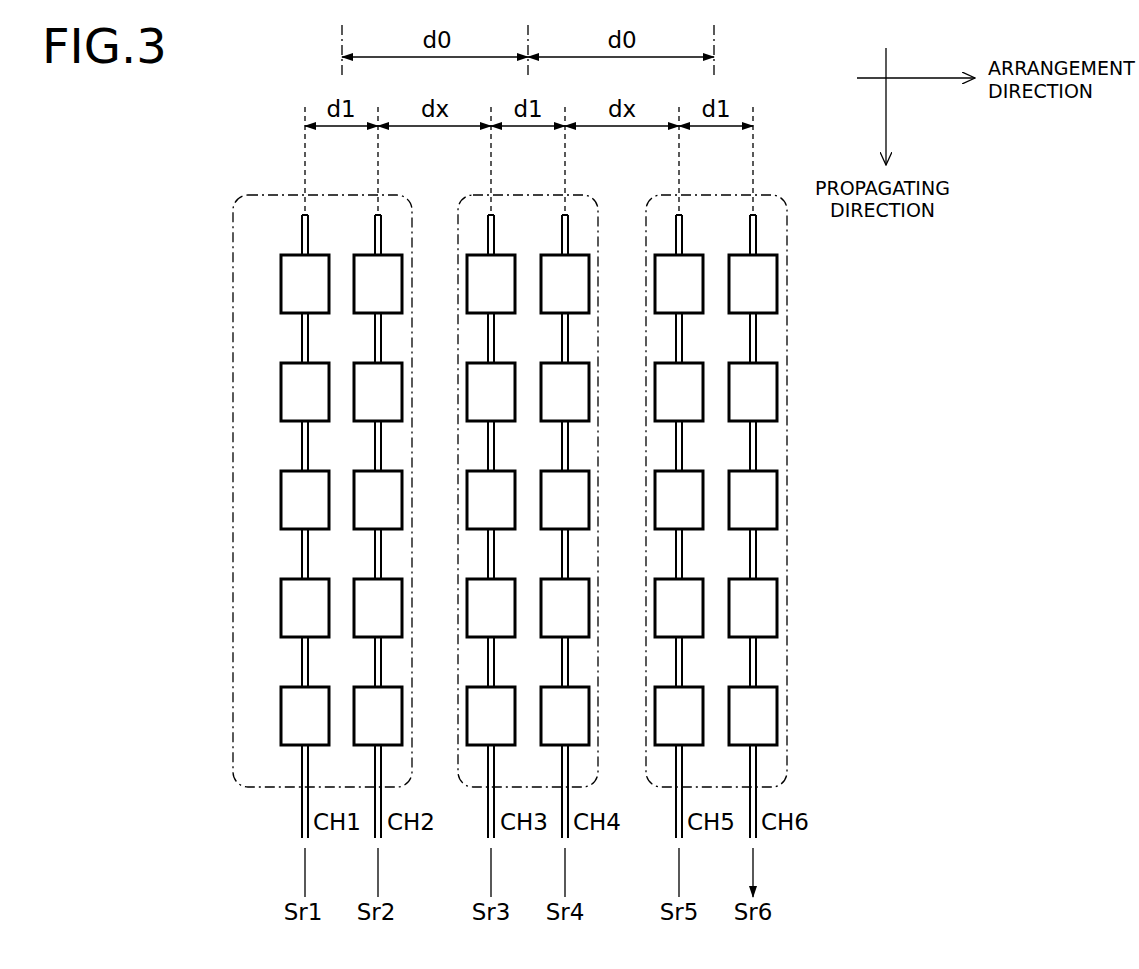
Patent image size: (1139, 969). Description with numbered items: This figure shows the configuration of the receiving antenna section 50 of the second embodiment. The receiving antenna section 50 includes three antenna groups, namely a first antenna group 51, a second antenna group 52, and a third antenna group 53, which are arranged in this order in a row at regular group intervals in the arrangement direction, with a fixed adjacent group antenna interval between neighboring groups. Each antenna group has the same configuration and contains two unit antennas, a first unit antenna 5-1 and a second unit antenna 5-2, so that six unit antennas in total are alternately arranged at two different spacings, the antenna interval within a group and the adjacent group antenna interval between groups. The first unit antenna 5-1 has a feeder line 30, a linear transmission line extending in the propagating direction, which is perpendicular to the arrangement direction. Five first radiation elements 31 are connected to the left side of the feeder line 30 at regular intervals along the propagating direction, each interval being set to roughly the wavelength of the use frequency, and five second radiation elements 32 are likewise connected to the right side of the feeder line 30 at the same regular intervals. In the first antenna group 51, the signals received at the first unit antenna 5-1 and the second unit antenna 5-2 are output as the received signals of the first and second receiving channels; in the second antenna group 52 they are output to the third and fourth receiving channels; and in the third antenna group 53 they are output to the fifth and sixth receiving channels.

The receiving antenna section 50 is at (243, 140).
The first antenna group 51 is at (229, 736).
The second antenna group 52 is at (467, 790).
The third antenna group 53 is at (654, 790).
The first unit antenna 5-1 is at (316, 236).
The second unit antenna 5-2 is at (390, 236).
The feeder line 30 is at (301, 752).
The first radiation element 31 is at (300, 254).
The second radiation element 32 is at (310, 256).